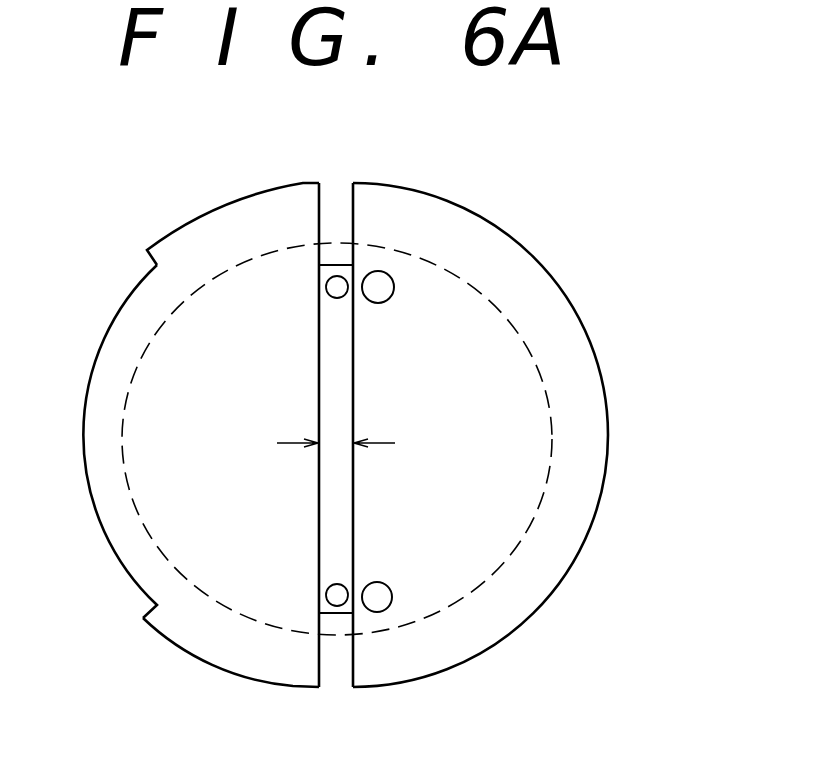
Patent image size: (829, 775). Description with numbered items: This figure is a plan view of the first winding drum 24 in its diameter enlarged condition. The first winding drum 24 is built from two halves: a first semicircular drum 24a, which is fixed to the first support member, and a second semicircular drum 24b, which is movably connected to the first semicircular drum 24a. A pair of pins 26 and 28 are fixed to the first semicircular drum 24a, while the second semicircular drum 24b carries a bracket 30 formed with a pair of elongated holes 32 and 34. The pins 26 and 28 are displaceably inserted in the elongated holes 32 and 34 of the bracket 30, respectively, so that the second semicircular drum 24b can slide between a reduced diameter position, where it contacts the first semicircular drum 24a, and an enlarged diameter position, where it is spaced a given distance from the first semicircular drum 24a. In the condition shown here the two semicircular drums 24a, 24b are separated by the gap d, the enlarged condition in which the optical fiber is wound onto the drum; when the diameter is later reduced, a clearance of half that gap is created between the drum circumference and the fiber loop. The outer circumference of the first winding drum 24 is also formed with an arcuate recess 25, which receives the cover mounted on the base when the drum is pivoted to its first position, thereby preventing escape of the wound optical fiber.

The first winding drum 24 is at (370, 428).
The first semicircular drum 24a is at (585, 400).
The second semicircular drum 24b is at (170, 428).
The arcuate recess 25 is at (96, 360).
The pin 26 is at (385, 296).
The pin 28 is at (383, 589).
The bracket 30 is at (332, 537).
The elongated hole 32 is at (337, 282).
The elongated hole 34 is at (337, 600).